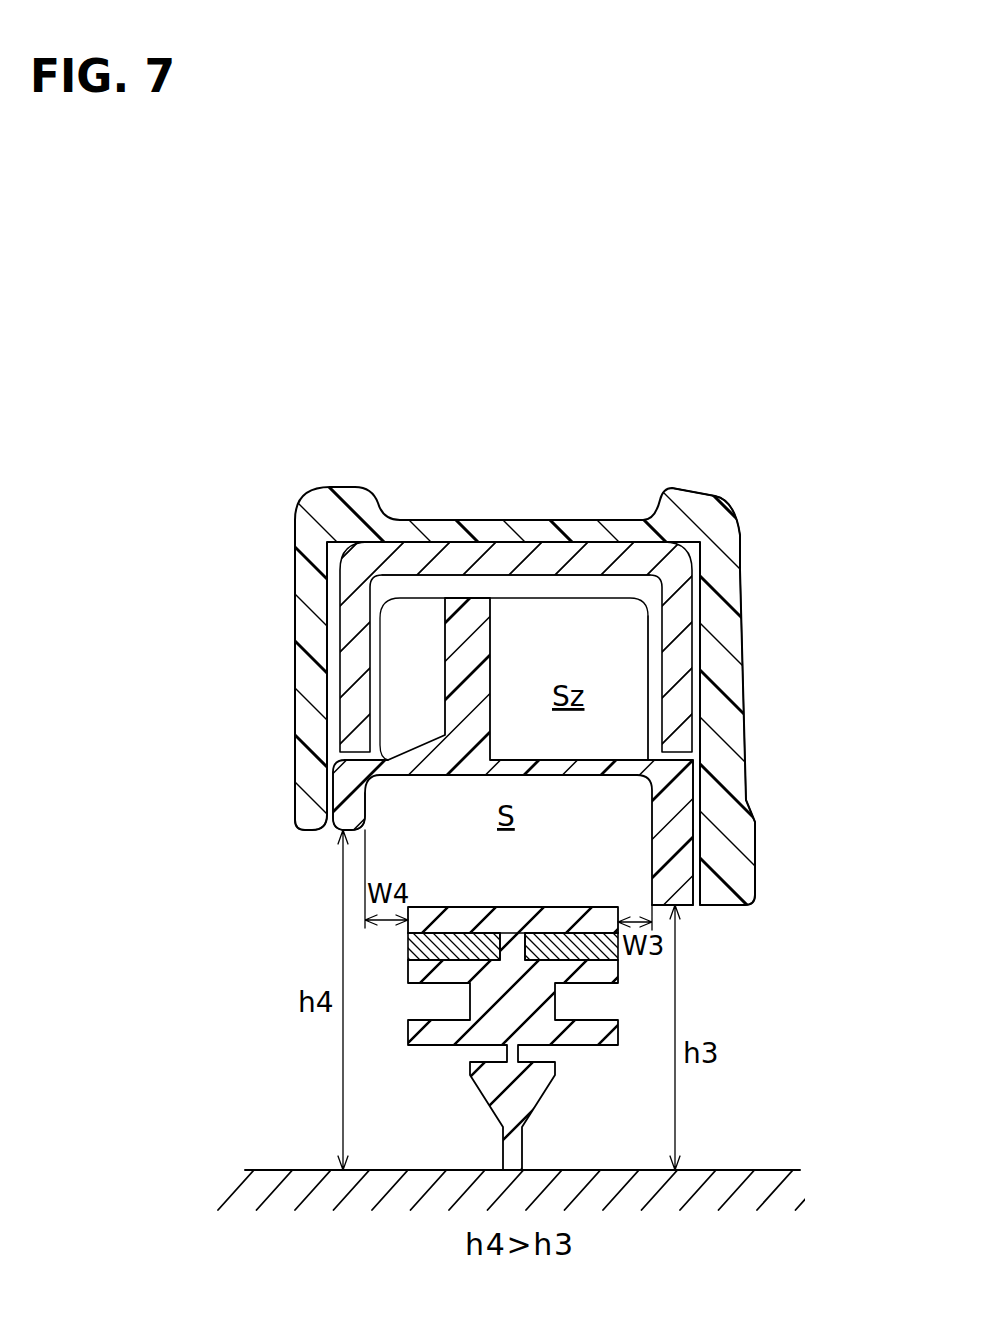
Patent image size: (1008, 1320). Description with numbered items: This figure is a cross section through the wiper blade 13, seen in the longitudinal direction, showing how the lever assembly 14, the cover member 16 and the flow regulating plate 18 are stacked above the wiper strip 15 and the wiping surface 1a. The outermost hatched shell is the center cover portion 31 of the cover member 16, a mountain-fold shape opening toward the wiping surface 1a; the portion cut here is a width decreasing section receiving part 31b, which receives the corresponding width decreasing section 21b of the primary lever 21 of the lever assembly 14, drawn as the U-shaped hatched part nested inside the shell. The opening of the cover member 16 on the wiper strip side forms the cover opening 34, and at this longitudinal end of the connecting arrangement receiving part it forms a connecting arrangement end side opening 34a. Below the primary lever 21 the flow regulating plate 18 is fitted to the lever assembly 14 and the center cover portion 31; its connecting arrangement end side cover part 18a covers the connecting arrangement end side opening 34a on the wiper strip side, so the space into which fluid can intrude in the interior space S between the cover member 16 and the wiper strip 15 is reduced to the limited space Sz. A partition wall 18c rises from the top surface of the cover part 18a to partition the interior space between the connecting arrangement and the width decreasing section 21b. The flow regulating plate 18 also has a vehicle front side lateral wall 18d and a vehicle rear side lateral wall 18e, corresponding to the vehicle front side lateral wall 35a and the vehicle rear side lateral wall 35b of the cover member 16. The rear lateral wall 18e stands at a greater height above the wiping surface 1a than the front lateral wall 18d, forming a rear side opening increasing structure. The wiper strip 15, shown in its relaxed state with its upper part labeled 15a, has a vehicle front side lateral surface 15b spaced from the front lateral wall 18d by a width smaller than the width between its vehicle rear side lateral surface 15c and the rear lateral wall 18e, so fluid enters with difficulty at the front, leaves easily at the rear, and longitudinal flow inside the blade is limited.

The wiper blade 13 is at (781, 413).
The cover member 16 is at (317, 479).
The center cover portion 31 is at (698, 492).
The width decreasing section receiving part 31b is at (720, 516).
The primary lever 21 is at (605, 547).
The width decreasing section 21b is at (557, 557).
The lever assembly 14 is at (459, 527).
The flow regulating plate 18 is at (427, 777).
The connecting arrangement end side cover part 18a is at (553, 768).
The partition wall 18c is at (640, 634).
The vehicle front side lateral wall 18d is at (683, 906).
The vehicle rear side lateral wall 18e is at (333, 838).
The cover opening 34 is at (690, 790).
The connecting arrangement end side opening 34a is at (690, 827).
The vehicle front side lateral wall 35a is at (722, 905).
The vehicle rear side lateral wall 35b is at (310, 828).
The wiper strip 15 is at (620, 973).
The inner seal top plate 15a is at (492, 907).
The vehicle front side lateral surface 15b is at (622, 904).
The vehicle rear side lateral surface 15c is at (408, 932).
The wiping surface 1a is at (793, 1168).